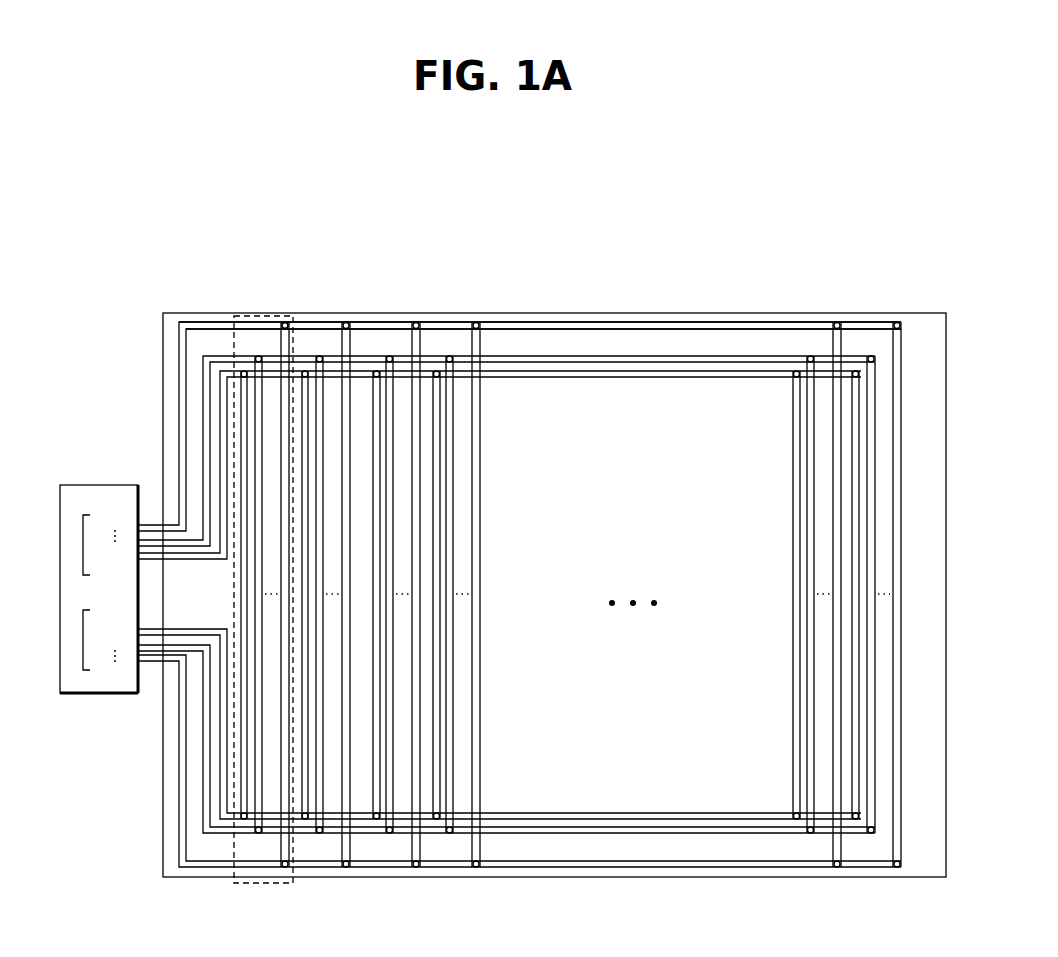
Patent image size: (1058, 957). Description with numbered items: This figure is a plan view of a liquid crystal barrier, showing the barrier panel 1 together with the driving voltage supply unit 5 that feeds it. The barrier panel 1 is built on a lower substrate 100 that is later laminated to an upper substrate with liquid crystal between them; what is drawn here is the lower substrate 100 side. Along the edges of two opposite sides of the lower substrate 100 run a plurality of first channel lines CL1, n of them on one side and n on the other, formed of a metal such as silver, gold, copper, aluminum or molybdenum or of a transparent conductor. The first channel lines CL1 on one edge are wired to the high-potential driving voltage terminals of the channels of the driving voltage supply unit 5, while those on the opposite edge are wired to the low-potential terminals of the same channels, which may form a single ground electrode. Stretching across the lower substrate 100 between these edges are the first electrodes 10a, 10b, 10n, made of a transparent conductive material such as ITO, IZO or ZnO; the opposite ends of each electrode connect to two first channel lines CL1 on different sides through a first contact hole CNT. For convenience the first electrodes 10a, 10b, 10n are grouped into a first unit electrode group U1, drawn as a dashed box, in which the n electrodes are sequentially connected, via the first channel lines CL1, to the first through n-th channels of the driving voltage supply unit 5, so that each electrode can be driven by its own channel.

The lower substrate 100 is at (915, 330).
The barrier panel 1 is at (927, 853).
The driving voltage supply unit 5 is at (85, 483).
The first unit electrode group U1 is at (292, 323).
The first electrode 10a is at (257, 795).
The first electrode 10b is at (260, 797).
The first electrode 10n is at (288, 849).
The first contact hole CNT is at (287, 326).
The first channel line CL1 is at (580, 322).